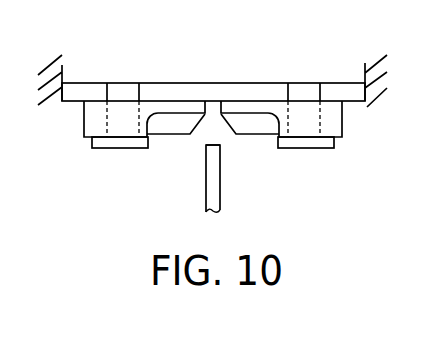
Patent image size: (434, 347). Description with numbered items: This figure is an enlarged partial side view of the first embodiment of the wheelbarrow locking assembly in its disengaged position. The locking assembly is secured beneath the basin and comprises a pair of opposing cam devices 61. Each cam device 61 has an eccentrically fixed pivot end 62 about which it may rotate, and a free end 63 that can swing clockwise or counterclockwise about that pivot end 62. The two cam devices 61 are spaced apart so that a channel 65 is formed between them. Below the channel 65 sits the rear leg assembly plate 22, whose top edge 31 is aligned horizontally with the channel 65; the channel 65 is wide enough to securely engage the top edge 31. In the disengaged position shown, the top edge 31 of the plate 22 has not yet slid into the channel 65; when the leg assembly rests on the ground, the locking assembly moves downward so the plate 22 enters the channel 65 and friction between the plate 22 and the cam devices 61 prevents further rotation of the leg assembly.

The rear leg assembly plate 22 is at (212, 180).
The top edge 31 is at (215, 143).
The cam device 61 is at (85, 130).
The pivot end 62 is at (105, 148).
The free end 63 is at (155, 108).
The channel 65 is at (215, 103).